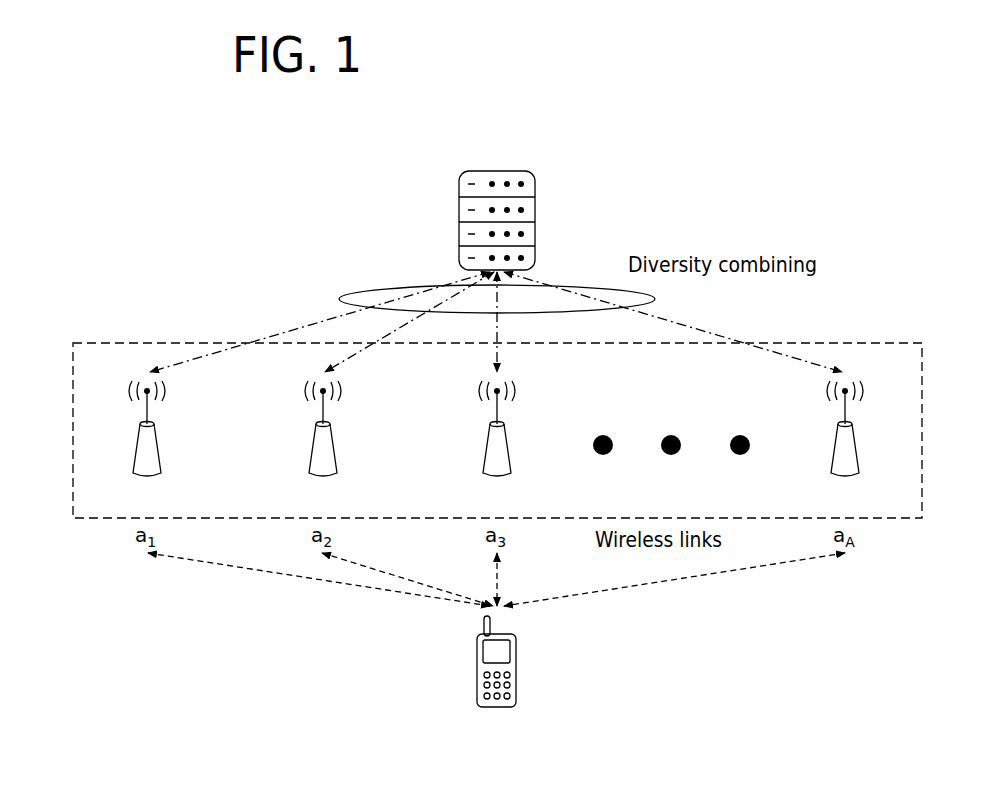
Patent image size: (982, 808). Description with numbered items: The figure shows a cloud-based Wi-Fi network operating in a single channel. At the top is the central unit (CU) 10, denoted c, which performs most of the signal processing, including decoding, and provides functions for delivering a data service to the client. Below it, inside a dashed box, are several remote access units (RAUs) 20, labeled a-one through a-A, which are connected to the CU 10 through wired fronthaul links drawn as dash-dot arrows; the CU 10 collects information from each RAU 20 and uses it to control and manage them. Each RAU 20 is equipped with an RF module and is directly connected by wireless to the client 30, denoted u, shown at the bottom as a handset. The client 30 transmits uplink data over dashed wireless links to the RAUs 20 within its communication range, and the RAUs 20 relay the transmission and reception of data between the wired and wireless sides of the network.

The central unit (CU) 10 is at (497, 170).
The remote access unit (RAU) 20 is at (72, 408).
The client 30 is at (477, 668).